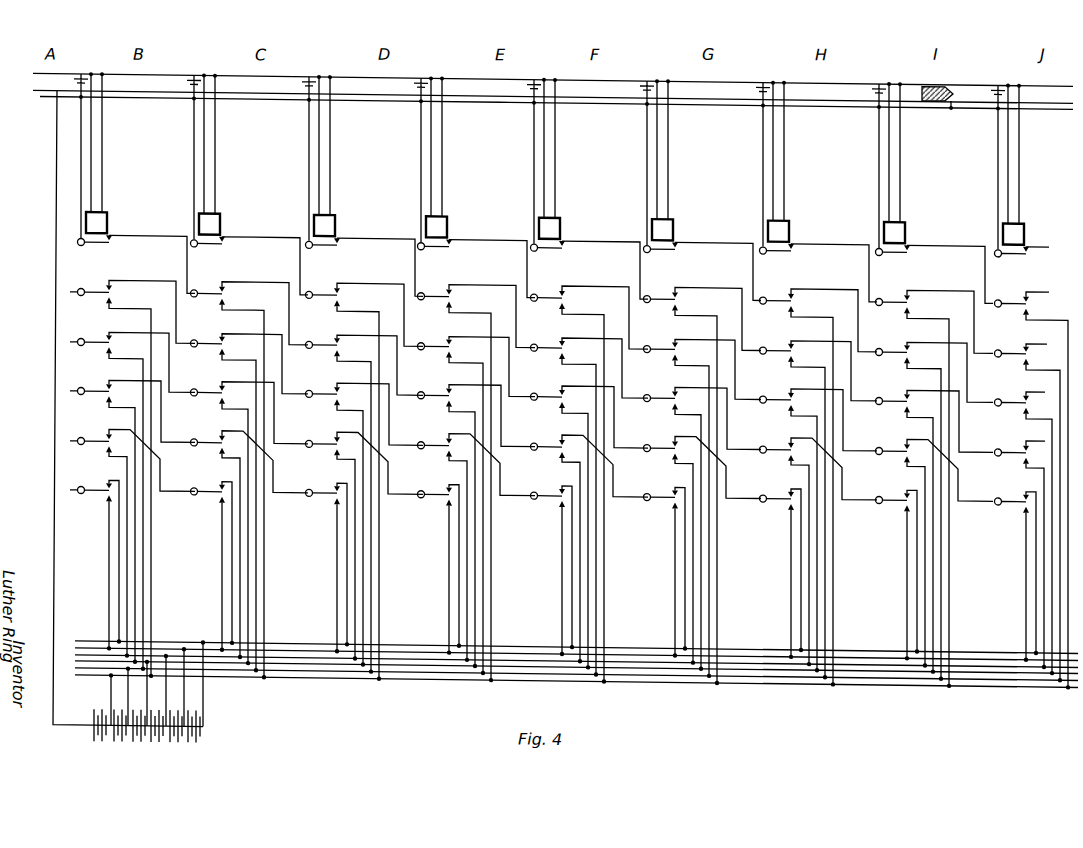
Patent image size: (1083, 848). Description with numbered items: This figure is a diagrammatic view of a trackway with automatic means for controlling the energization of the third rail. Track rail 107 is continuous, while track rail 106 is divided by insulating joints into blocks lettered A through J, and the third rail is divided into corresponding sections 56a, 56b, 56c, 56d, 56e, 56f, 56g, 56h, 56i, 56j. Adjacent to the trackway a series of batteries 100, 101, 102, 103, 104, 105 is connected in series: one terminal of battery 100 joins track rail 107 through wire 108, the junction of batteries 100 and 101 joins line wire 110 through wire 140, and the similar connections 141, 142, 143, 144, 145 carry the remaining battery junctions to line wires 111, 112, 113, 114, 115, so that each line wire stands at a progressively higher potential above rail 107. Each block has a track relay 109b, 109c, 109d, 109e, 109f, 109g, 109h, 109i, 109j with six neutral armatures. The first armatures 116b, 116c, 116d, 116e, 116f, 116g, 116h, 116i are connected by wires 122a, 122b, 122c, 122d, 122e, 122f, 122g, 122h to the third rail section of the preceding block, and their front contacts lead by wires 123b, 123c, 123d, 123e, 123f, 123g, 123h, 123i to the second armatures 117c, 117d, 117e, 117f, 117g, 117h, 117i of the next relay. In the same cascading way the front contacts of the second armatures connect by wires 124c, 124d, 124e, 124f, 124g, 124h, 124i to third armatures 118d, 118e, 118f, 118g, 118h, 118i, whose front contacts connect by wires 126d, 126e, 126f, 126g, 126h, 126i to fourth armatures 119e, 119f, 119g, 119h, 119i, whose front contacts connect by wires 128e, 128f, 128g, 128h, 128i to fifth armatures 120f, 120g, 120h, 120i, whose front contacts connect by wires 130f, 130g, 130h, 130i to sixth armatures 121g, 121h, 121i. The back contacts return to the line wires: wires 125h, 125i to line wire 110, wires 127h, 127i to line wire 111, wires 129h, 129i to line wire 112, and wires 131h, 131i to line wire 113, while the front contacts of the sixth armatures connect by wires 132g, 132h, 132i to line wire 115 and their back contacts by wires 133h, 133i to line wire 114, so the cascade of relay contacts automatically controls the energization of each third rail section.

The third rail section 56a is at (44, 97).
The third rail section 56b is at (163, 97).
The third rail section 56c is at (304, 97).
The third rail section 56d is at (396, 97).
The third rail section 56e is at (512, 97).
The third rail section 56f is at (624, 97).
The third rail section 56g is at (740, 97).
The third rail section 56h is at (855, 97).
The third rail section 56i is at (955, 103).
The third rail section 56j is at (1057, 96).
The battery 100 is at (100, 744).
The battery 101 is at (120, 744).
The battery 102 is at (139, 745).
The battery 103 is at (157, 745).
The battery 104 is at (176, 744).
The battery 105 is at (194, 744).
The track rail 106 is at (33, 73).
The track rail 107 is at (33, 90).
The wire 108 is at (54, 573).
The track relay 109b is at (104, 210).
The track relay 109c is at (231, 154).
The track relay 109d is at (347, 156).
The track relay 109e is at (458, 157).
The track relay 109f is at (570, 159).
The track relay 109g is at (684, 160).
The track relay 109h is at (800, 162).
The track relay 109i is at (914, 163).
The track relay 109j is at (1033, 165).
The line wire 110 is at (960, 674).
The line wire 111 is at (968, 667).
The line wire 112 is at (975, 660).
The line wire 113 is at (972, 654).
The line wire 114 is at (963, 647).
The line wire 115 is at (957, 640).
The neutral armature 116b is at (107, 236).
The neutral armature 116c is at (230, 226).
The neutral armature 116d is at (346, 228).
The neutral armature 116e is at (458, 229).
The neutral armature 116f is at (570, 231).
The neutral armature 116g is at (684, 232).
The neutral armature 116h is at (800, 233).
The neutral armature 116i is at (913, 235).
The neutral armature 117c is at (211, 281).
The neutral armature 117d is at (327, 283).
The neutral armature 117e is at (439, 284).
The neutral armature 117f is at (551, 286).
The neutral armature 117g is at (665, 287).
The neutral armature 117h is at (781, 288).
The neutral armature 117i is at (894, 290).
The neutral armature 118d is at (317, 336).
The neutral armature 118e is at (429, 337).
The neutral armature 118f is at (542, 339).
The neutral armature 118g is at (655, 340).
The neutral armature 118h is at (771, 341).
The neutral armature 118i is at (887, 343).
The neutral armature 119e is at (426, 386).
The neutral armature 119f is at (539, 387).
The neutral armature 119g is at (652, 389).
The neutral armature 119h is at (768, 390).
The neutral armature 119i is at (884, 392).
The neutral armature 120f is at (534, 438).
The neutral armature 120g is at (647, 440).
The neutral armature 120h is at (763, 441).
The neutral armature 120i is at (879, 443).
The neutral armature 121g is at (646, 490).
The neutral armature 121h is at (762, 491).
The neutral armature 121i is at (878, 493).
The wire 122a is at (80, 166).
The wire 122b is at (171, 157).
The wire 122c is at (286, 158).
The wire 122d is at (398, 160).
The wire 122e is at (511, 161).
The wire 122f is at (624, 162).
The wire 122g is at (740, 164).
The wire 122h is at (856, 165).
The wire 123b is at (131, 238).
The wire 123c is at (265, 257).
The wire 123d is at (380, 258).
The wire 123e is at (492, 260).
The wire 123f is at (605, 261).
The wire 123g is at (718, 262).
The wire 123h is at (834, 264).
The wire 123i is at (950, 265).
The wire 124c is at (265, 306).
The wire 124d is at (380, 307).
The wire 124e is at (492, 309).
The wire 124f is at (605, 310).
The wire 124g is at (718, 311).
The wire 124h is at (834, 313).
The wire 124i is at (950, 314).
The wire 125h is at (813, 496).
The wire 125i is at (927, 497).
The wire 126d is at (377, 357).
The wire 126e is at (489, 359).
The wire 126f is at (602, 360).
The wire 126g is at (715, 361).
The wire 126h is at (831, 363).
The wire 126i is at (947, 364).
The wire 127h is at (813, 516).
The wire 127i is at (926, 517).
The wire 128e is at (486, 406).
The wire 128f is at (599, 408).
The wire 128g is at (712, 409).
The wire 128h is at (828, 411).
The wire 128i is at (944, 412).
The wire 129h is at (813, 538).
The wire 129i is at (926, 539).
The wire 130f is at (595, 457).
The wire 130g is at (708, 458).
The wire 130h is at (824, 460).
The wire 130i is at (940, 461).
The wire 131h is at (783, 560).
The wire 131i is at (899, 562).
The wire 132g is at (682, 559).
The wire 132h is at (798, 561).
The wire 132i is at (912, 562).
The wire 133h is at (773, 581).
The wire 133i is at (889, 583).
The wire 140 is at (111, 684).
The conductor 141 is at (128, 692).
The conductor 142 is at (147, 686).
The conductor 143 is at (167, 690).
The conductor 144 is at (184, 704).
The conductor 145 is at (203, 705).